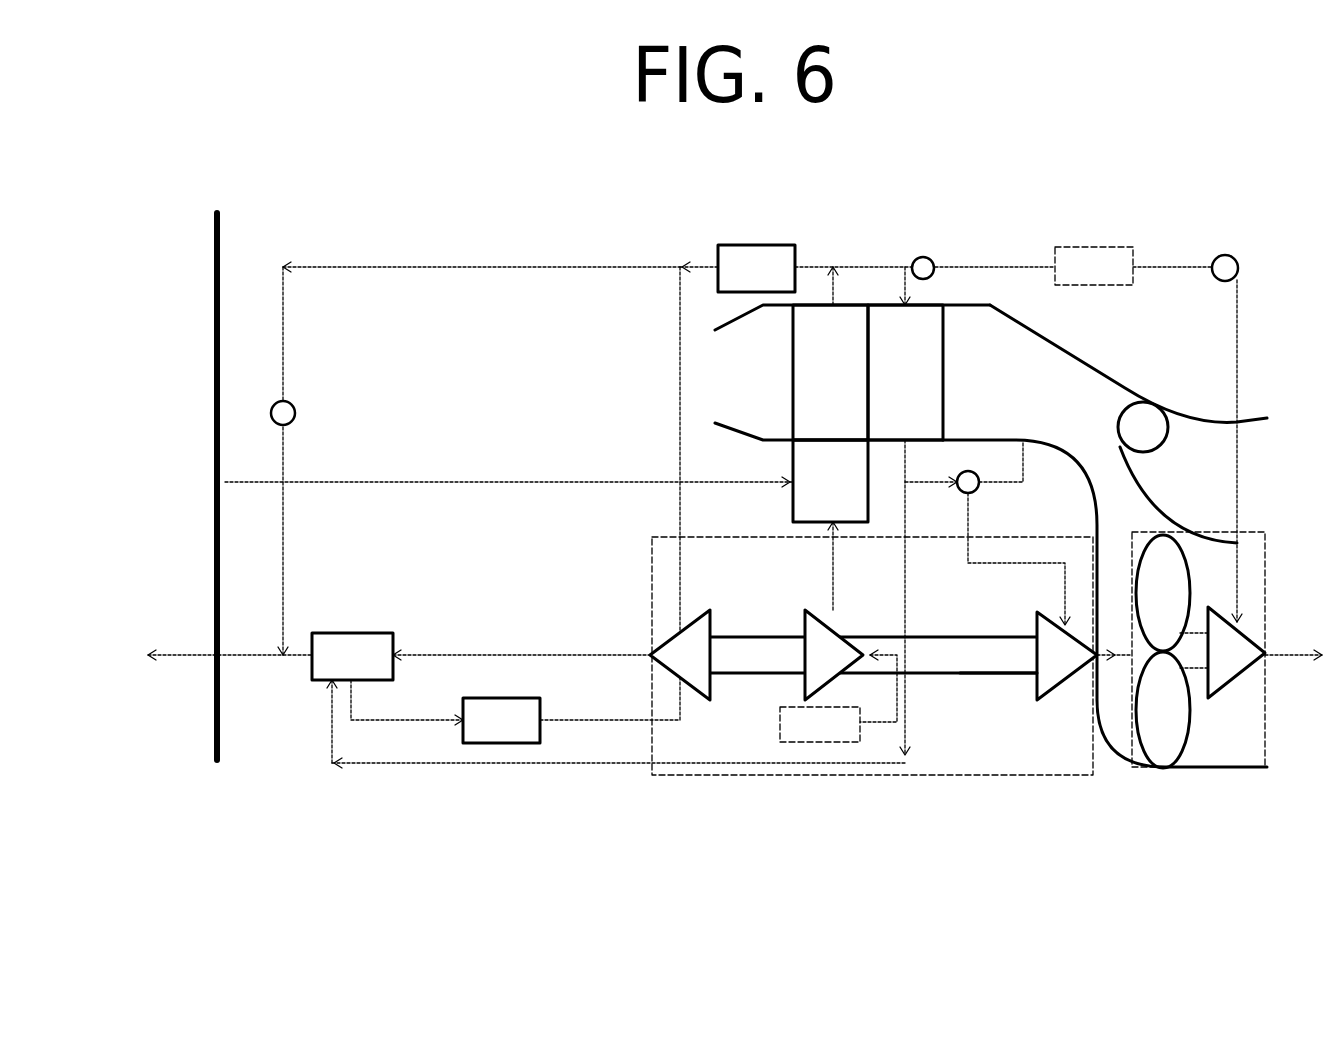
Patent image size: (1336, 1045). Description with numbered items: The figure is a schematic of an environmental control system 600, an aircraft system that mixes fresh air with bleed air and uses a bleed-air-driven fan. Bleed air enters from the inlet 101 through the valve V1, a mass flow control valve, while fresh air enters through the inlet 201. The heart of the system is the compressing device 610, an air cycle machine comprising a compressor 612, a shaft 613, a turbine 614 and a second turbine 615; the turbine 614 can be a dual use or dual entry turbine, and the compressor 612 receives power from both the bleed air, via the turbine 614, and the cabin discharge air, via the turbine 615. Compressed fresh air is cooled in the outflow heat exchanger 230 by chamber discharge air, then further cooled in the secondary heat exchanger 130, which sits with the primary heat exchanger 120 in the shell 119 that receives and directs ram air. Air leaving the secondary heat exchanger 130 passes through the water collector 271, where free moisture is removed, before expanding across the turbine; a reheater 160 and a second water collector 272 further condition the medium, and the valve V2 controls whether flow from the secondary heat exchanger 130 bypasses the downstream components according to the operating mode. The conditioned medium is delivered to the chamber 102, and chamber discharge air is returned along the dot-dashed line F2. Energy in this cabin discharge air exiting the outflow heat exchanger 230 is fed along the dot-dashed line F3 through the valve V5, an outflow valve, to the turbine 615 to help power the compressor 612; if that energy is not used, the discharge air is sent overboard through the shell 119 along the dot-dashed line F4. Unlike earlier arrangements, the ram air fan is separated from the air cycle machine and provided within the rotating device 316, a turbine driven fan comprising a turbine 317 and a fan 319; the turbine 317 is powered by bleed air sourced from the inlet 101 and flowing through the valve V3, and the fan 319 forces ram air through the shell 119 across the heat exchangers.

The environmental control system 600 is at (1190, 148).
The chamber 102 is at (215, 212).
The water collector 271 is at (756, 268).
The valve V1 is at (914, 260).
The inlet 101 is at (1094, 266).
The valve V3 is at (1212, 263).
The secondary heat exchanger 130 is at (830, 372).
The primary heat exchanger 120 is at (905, 372).
The outflow heat exchanger 230 is at (830, 481).
The shell 119 is at (1141, 392).
The dot-dashed line F4 is at (1058, 443).
The valve V5 is at (961, 474).
The valve V2 is at (272, 411).
The dot-dashed line F2 is at (442, 478).
The fan 319 is at (1177, 528).
The reheater 160 is at (352, 656).
The turbine 614 is at (680, 655).
The compressor 612 is at (834, 655).
The turbine 615 is at (1067, 656).
The turbine 317 is at (1236, 652).
The water collector 272 is at (501, 720).
The inlet 201 is at (838, 696).
The shaft 613 is at (1003, 680).
The rotating device 316 is at (1130, 780).
The compressing device 610 is at (748, 777).
The dot-dashed line F3 is at (972, 572).